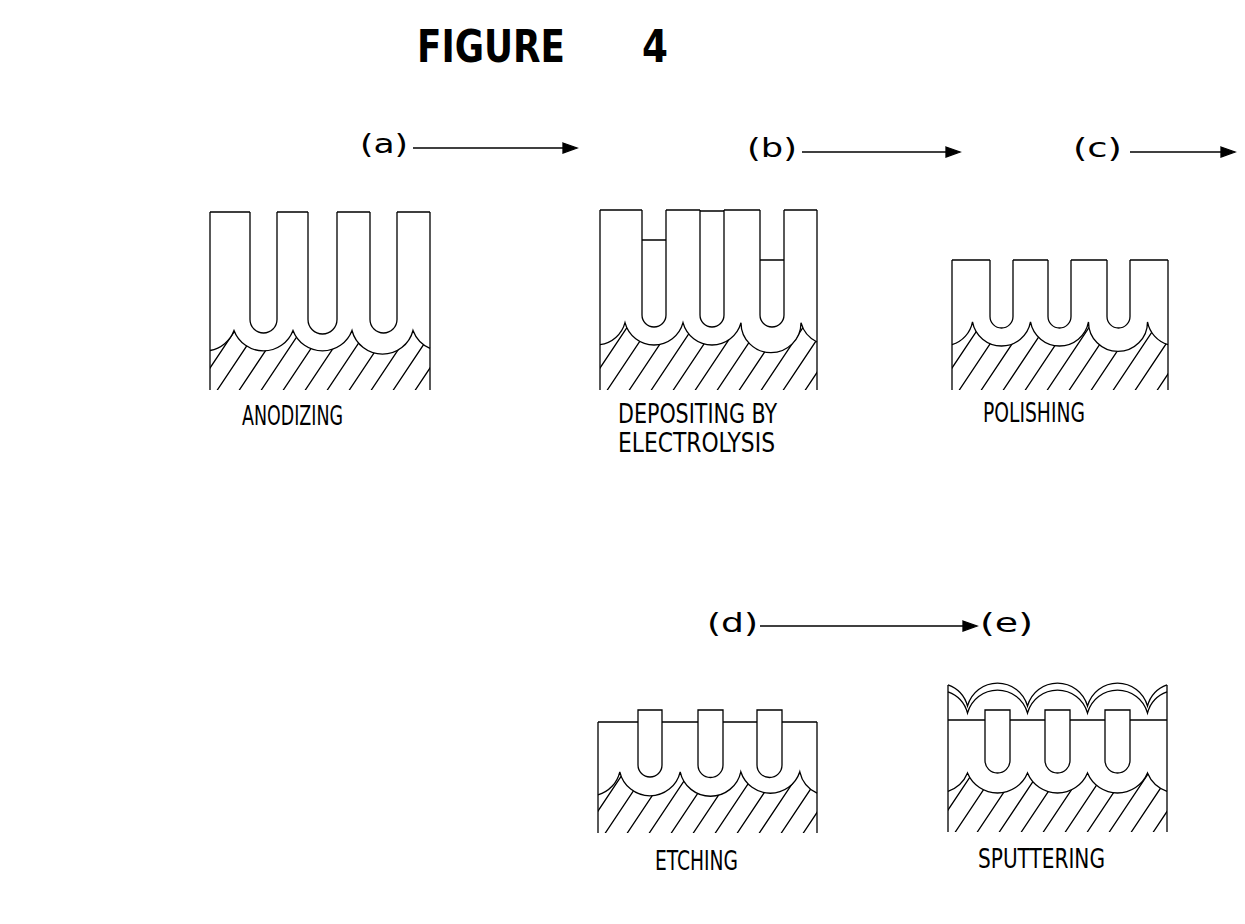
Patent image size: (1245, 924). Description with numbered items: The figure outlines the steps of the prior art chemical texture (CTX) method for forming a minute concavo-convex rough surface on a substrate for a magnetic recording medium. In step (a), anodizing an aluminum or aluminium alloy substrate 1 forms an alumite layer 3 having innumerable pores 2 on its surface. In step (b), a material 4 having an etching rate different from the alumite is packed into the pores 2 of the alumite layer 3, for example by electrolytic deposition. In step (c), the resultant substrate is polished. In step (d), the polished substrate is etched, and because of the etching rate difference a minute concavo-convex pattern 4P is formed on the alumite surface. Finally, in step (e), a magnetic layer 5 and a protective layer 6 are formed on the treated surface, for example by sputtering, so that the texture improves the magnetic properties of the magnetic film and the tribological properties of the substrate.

The aluminum or aluminium alloy substrate 1 is at (226, 362).
The pores 2 is at (257, 245).
The alumite layer 3 is at (226, 254).
The material 4 is at (712, 210).
The minute concavo-convex pattern 4P is at (707, 712).
The magnetic layer 5 is at (995, 700).
The protective layer 6 is at (1057, 686).